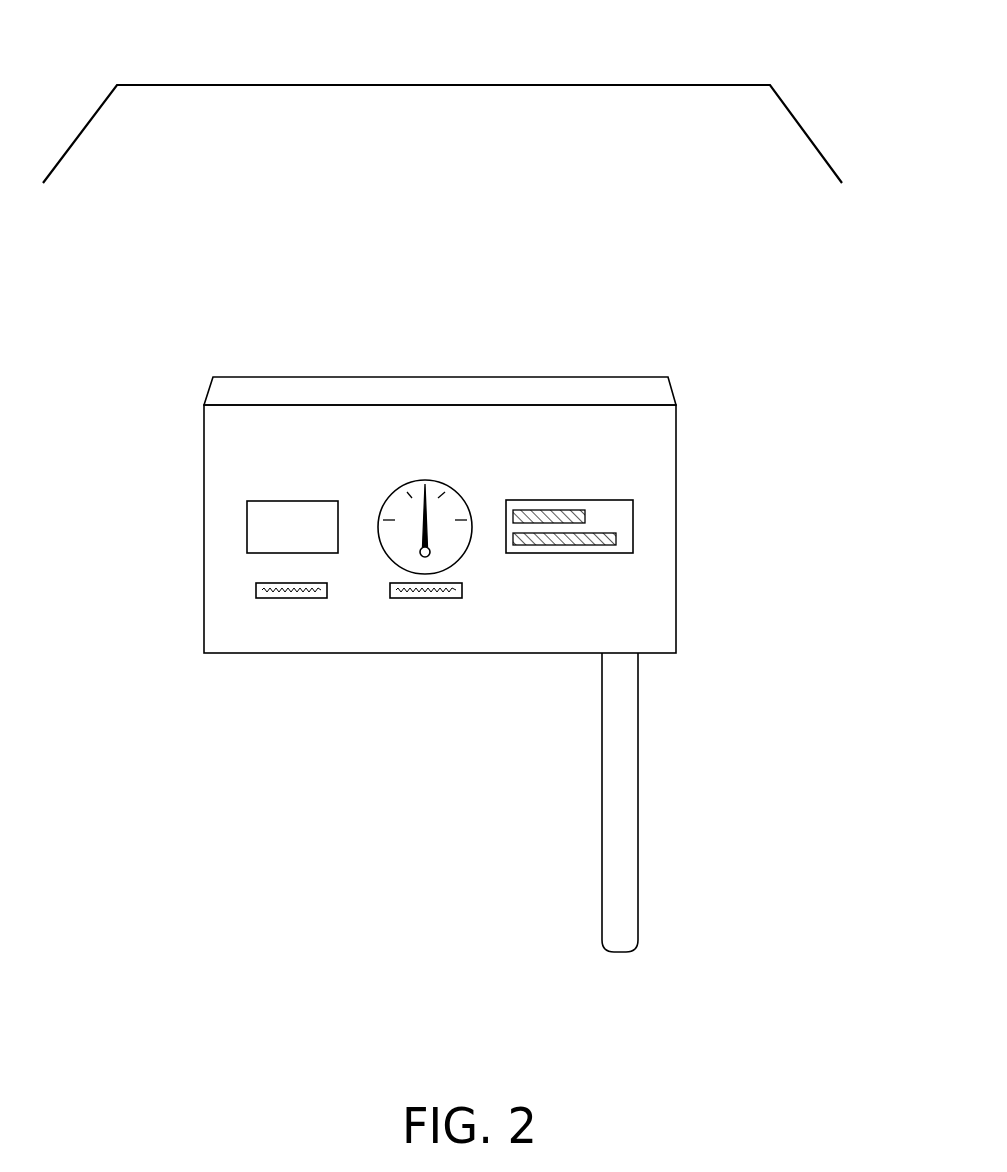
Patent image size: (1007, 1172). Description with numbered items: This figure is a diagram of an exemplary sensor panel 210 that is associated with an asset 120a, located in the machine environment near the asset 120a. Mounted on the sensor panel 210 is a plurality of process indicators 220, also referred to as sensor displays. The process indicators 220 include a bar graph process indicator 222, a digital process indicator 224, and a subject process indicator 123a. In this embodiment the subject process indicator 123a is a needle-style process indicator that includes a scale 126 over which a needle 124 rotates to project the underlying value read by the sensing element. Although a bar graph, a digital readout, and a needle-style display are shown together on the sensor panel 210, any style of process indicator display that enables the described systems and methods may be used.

The asset 120a is at (583, 84).
The sensor panel 210 is at (677, 448).
The process indicators 220 is at (522, 497).
The bar graph process indicator 222 is at (578, 572).
The digital process indicator 224 is at (287, 615).
The needle 124 is at (420, 550).
The scale 126 is at (466, 551).
The subject process indicator 123a is at (428, 615).